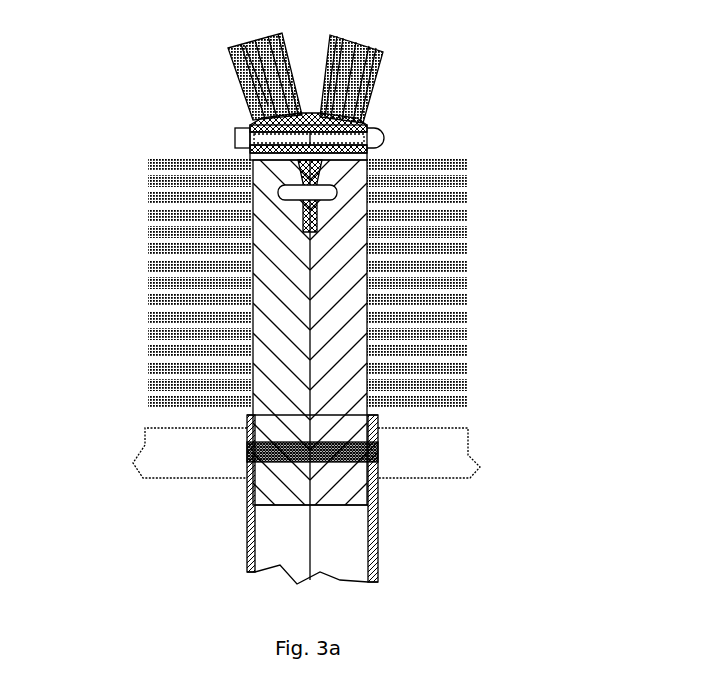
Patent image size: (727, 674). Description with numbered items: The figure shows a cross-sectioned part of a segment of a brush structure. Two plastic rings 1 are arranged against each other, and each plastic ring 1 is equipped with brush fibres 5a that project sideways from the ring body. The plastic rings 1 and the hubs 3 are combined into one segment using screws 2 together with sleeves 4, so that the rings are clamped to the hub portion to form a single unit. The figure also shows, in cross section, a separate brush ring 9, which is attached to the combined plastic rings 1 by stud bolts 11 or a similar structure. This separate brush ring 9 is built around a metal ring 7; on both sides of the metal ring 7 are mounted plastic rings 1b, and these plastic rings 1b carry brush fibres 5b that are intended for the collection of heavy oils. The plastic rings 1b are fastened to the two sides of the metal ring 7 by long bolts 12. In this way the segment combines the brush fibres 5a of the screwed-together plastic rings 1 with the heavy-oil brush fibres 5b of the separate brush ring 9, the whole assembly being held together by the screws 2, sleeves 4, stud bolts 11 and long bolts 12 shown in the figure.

The plastic ring 1 is at (348, 245).
The plastic ring 1b is at (250, 126).
The screw 2 is at (273, 452).
The hub 3 is at (378, 553).
The sleeve 4 is at (168, 452).
The brush fibres 5a is at (178, 307).
The brush fibres 5b is at (366, 72).
The metal ring 7 is at (308, 224).
The separate brush ring 9 is at (368, 121).
The stud bolt 11 is at (295, 191).
The long bolt 12 is at (382, 137).